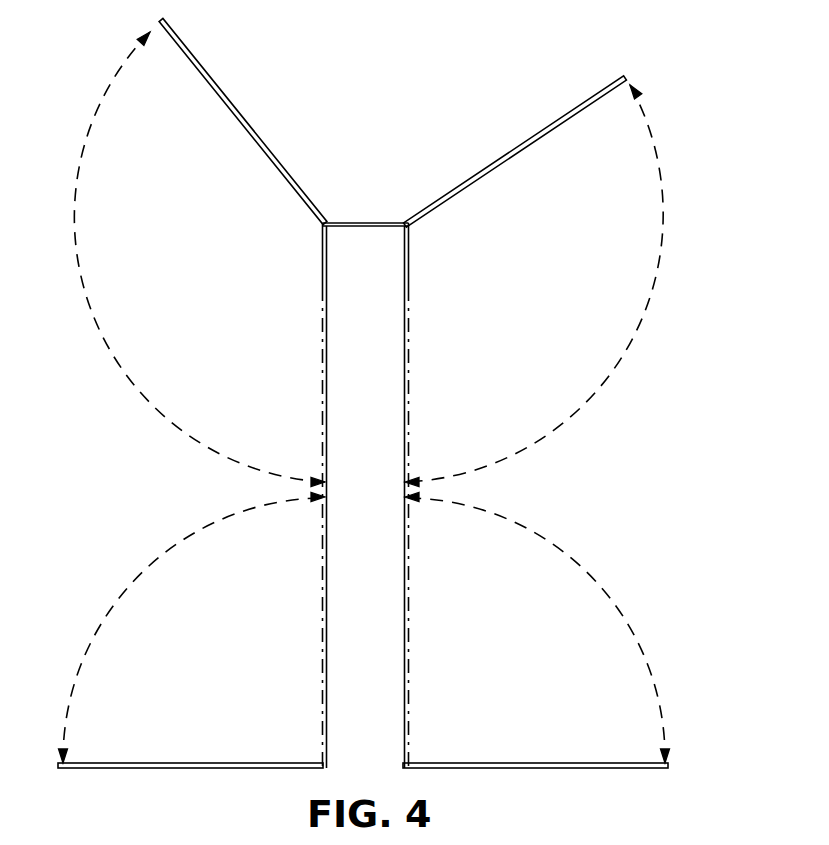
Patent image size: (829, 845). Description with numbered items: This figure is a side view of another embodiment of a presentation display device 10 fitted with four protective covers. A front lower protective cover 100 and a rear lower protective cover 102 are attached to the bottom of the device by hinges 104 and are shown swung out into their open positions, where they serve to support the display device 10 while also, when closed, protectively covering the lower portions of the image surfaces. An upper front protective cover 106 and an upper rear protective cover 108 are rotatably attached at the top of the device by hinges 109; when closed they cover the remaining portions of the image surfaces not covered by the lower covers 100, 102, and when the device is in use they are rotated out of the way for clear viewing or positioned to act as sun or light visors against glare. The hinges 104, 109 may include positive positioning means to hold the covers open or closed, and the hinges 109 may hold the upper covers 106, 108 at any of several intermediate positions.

The display device 10 is at (678, 158).
The front lower protective cover 100 is at (173, 760).
The rear lower protective cover 102 is at (522, 760).
The hinges 104 is at (320, 760).
The upper front protective cover 106 is at (232, 103).
The upper rear protective cover 108 is at (518, 147).
The hinges 109 is at (322, 227).